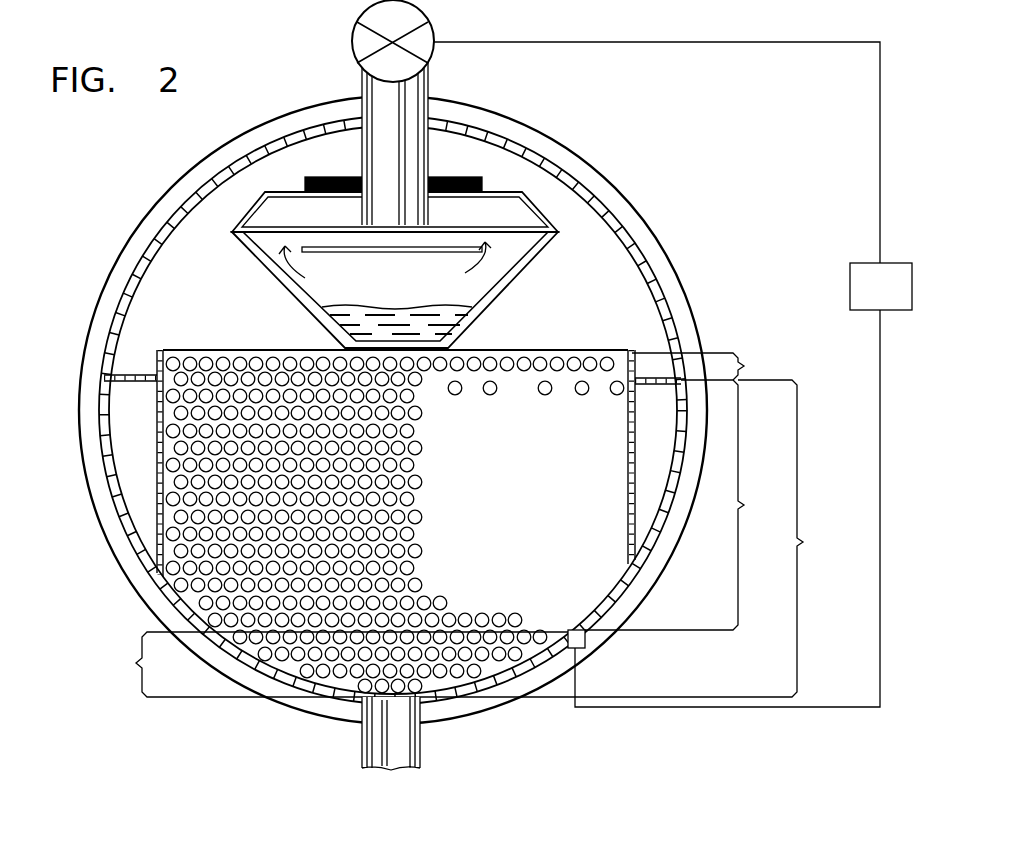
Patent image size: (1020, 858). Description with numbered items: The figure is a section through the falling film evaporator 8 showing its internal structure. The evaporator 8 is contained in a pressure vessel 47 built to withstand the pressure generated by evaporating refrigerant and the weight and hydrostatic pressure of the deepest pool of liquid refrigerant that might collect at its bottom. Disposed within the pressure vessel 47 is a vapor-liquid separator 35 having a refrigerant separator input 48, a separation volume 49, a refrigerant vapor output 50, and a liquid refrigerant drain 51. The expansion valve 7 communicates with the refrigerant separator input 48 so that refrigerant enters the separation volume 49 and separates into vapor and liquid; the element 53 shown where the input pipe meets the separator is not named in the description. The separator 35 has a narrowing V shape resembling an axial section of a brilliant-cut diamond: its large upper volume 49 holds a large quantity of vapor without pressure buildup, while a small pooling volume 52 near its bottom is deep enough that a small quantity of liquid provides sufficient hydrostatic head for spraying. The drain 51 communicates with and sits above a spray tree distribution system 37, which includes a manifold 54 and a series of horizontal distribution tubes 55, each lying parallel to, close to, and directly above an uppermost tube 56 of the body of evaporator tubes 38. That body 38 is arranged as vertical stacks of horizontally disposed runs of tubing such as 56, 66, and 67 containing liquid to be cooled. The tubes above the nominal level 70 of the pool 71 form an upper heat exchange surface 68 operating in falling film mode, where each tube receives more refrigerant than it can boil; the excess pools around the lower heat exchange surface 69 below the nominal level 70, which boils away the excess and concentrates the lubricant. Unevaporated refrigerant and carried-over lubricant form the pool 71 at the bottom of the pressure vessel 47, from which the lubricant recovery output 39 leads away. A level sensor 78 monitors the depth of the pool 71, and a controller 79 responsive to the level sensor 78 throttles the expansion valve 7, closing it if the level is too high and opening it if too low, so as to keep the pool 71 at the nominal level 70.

The expansion valve 7 is at (354, 34).
The falling film evaporator 8 is at (92, 516).
The vapor-liquid separator 35 is at (268, 262).
The spray tree distribution system 37 is at (708, 368).
The body of evaporator tubes 38 is at (709, 538).
The lubricant recovery output 39 is at (420, 755).
The pressure vessel 47 is at (170, 195).
The refrigerant separator input 48 is at (392, 130).
The separation volume 49 is at (366, 285).
The refrigerant vapor output 50 is at (452, 178).
The liquid refrigerant drain 51 is at (470, 348).
The pooling volume 52 is at (472, 314).
The collar 53 is at (462, 185).
The manifold 54 is at (560, 352).
The horizontal distribution tube 55 is at (312, 352).
The uppermost evaporator tube 56 is at (265, 352).
The evaporator tube run 66 is at (232, 356).
The evaporator tube run 67 is at (245, 403).
The upper heat exchange surface 68 is at (685, 505).
The lower heat exchange surface 69 is at (337, 664).
The nominal level 70 is at (210, 630).
The pool 71 is at (313, 685).
The level sensor 78 is at (586, 645).
The controller 79 is at (898, 303).